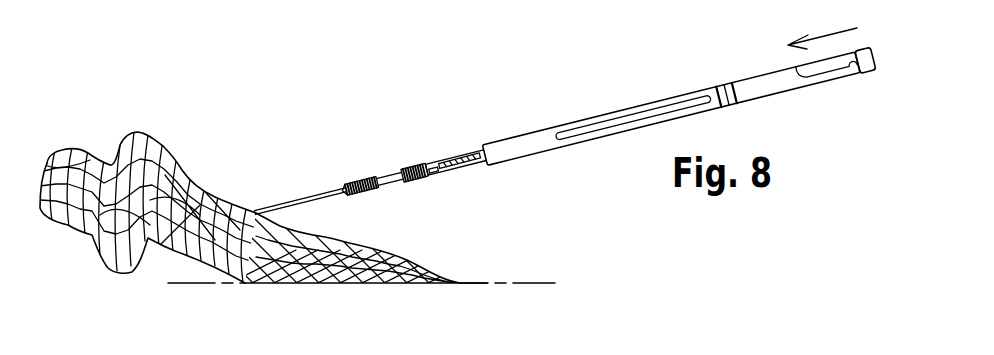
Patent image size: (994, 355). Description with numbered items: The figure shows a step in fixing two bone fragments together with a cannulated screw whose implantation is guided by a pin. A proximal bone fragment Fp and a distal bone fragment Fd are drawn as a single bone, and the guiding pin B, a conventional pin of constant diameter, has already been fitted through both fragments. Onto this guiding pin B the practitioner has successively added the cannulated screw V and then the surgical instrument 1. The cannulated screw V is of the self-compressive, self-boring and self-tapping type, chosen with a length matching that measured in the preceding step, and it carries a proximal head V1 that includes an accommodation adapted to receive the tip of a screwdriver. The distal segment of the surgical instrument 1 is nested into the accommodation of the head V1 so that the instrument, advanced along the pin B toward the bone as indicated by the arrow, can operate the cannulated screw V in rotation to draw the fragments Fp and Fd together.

The distal bone fragment Fd is at (174, 133).
The proximal bone fragment Fp is at (361, 302).
The pin B is at (305, 200).
The cannulated screw V is at (400, 173).
The proximal head V1 is at (418, 154).
The surgical instrument 1 is at (661, 88).